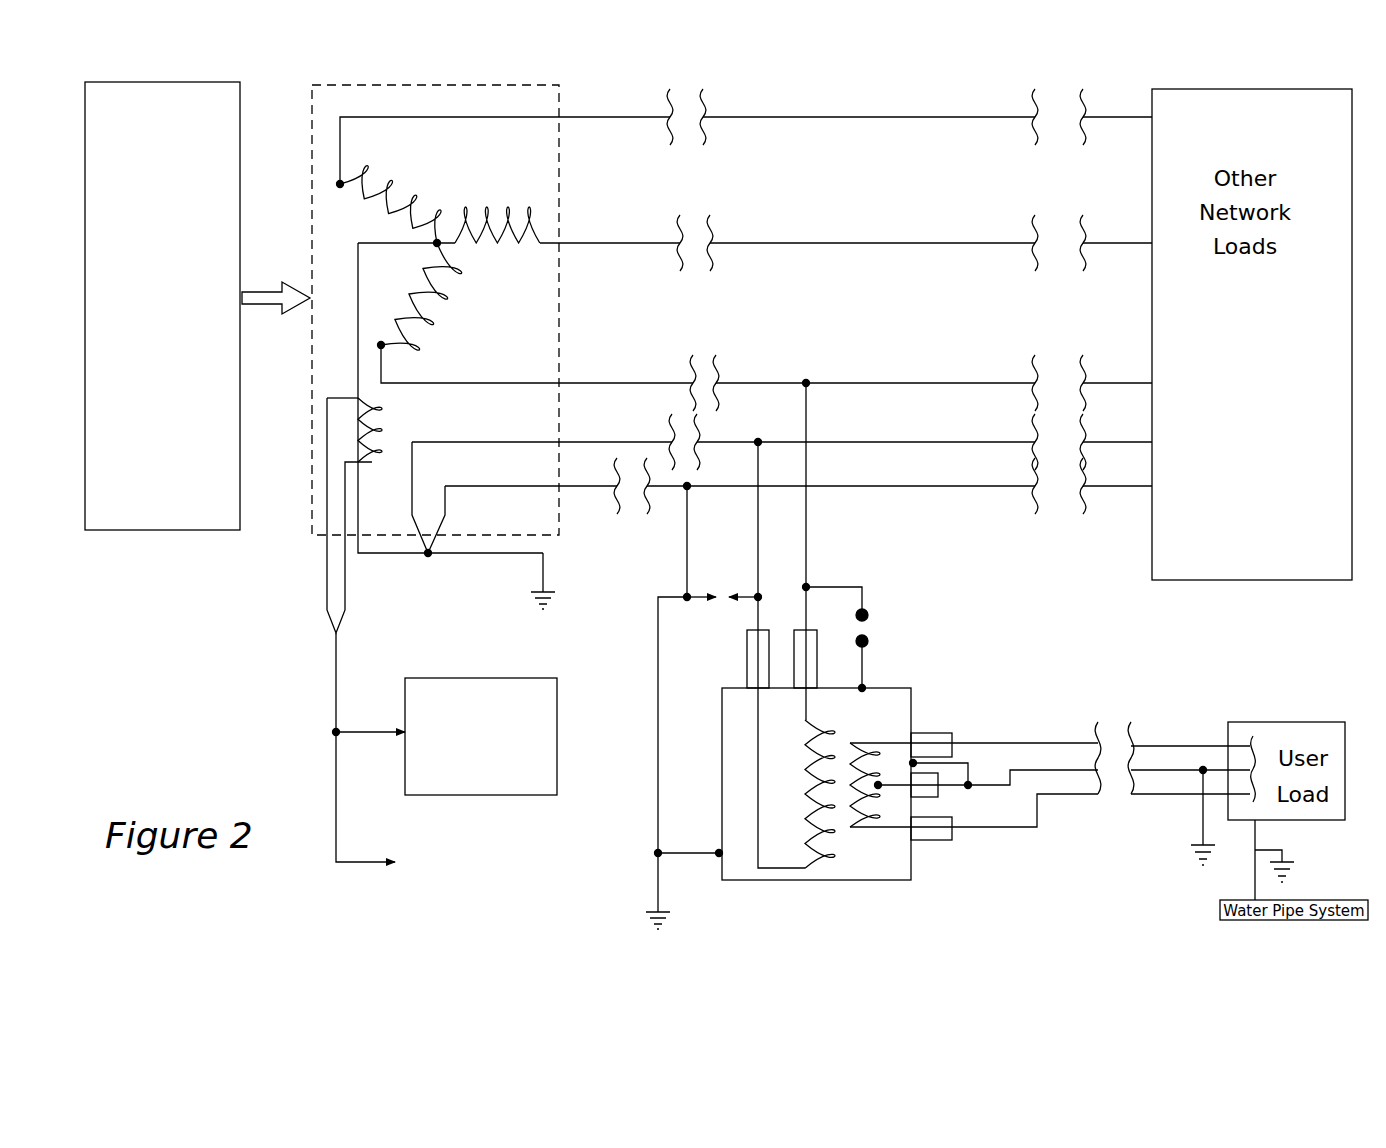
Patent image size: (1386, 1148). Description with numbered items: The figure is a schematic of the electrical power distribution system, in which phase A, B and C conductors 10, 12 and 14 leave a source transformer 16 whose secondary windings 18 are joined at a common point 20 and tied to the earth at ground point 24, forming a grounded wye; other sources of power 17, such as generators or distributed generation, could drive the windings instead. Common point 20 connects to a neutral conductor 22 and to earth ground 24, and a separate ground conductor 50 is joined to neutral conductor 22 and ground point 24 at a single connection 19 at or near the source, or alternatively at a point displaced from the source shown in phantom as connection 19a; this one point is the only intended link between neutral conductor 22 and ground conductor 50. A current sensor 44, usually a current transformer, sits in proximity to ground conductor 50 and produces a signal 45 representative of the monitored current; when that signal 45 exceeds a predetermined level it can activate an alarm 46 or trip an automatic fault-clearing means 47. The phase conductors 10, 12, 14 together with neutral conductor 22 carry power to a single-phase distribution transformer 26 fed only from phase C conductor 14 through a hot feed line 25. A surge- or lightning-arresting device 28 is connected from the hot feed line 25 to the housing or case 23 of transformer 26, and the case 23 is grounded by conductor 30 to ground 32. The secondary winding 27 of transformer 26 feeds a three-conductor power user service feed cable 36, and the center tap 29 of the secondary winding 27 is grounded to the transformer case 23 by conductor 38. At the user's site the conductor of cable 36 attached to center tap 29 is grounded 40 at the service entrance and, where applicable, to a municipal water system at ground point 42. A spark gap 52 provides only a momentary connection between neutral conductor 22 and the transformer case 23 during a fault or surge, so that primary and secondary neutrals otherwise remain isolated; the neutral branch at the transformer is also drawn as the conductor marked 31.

The phase A conductor 10 is at (845, 117).
The phase B conductor 12 is at (825, 243).
The phase C conductor 14 is at (838, 383).
The source transformer 16 is at (597, 203).
The other sources of power 17 is at (143, 530).
The secondary windings 18 is at (383, 172).
The connection point 19 is at (428, 556).
The displaced connection point 19a is at (573, 467).
The common point 20 is at (436, 248).
The neutral conductor 22 is at (593, 442).
The transformer case 23 is at (913, 712).
The ground point 24 is at (540, 585).
The hot feed line 25 is at (806, 552).
The distribution transformer 26 is at (777, 897).
The secondary winding 27 is at (860, 828).
The surge- or lightning-arresting device 28 is at (866, 630).
The center tap 29 is at (878, 787).
The ground conductor 30 is at (693, 856).
The neutral conductor 31 is at (653, 632).
The ground point 32 is at (656, 897).
The power user service feed cable 36 is at (1075, 737).
The conductor 38 is at (969, 760).
The ground 40 is at (1202, 825).
The ground point 42 is at (1285, 855).
The current sensor 44 is at (374, 466).
The signal 45 is at (336, 700).
The alarm 46 is at (557, 698).
The automatic fault-clearing means 47 is at (558, 833).
The ground conductor 50 is at (580, 490).
The spark gap 52 is at (717, 590).